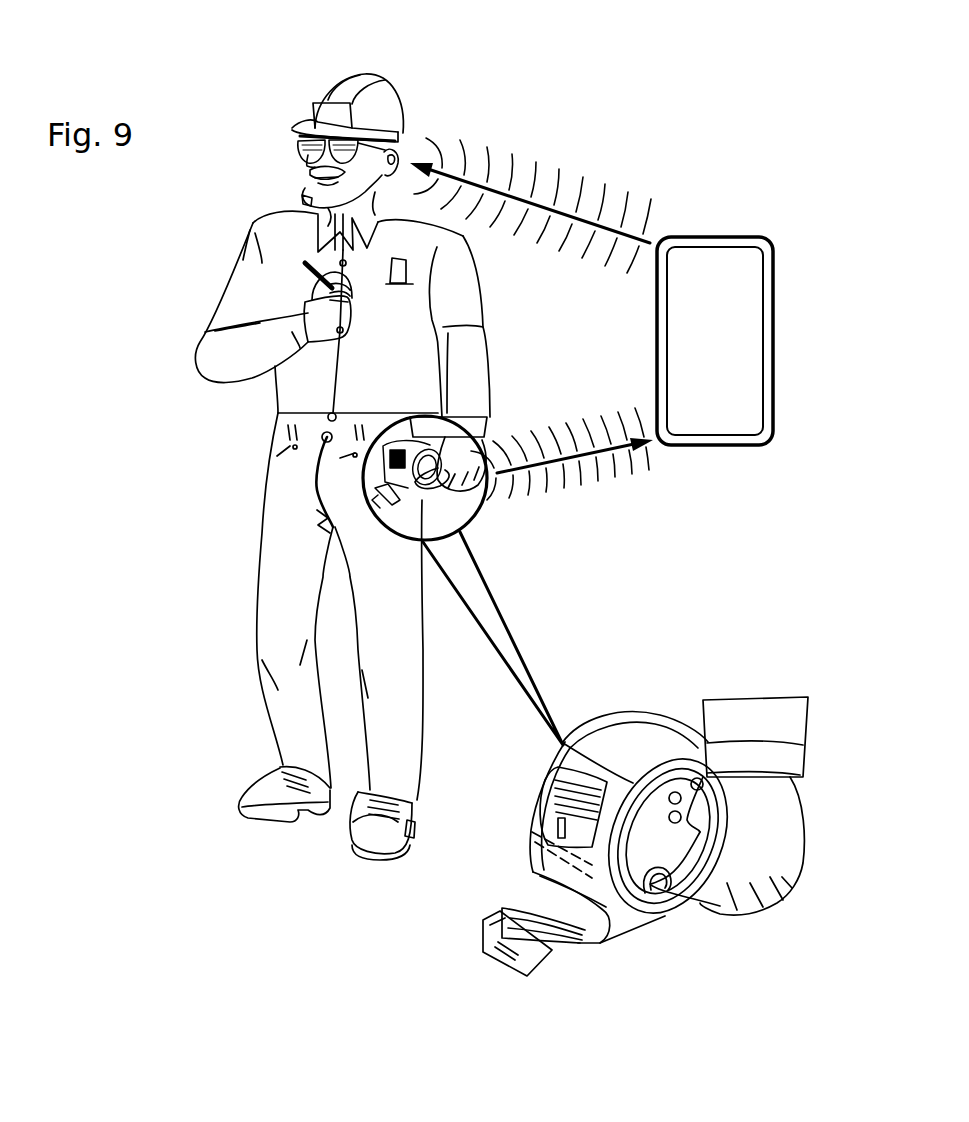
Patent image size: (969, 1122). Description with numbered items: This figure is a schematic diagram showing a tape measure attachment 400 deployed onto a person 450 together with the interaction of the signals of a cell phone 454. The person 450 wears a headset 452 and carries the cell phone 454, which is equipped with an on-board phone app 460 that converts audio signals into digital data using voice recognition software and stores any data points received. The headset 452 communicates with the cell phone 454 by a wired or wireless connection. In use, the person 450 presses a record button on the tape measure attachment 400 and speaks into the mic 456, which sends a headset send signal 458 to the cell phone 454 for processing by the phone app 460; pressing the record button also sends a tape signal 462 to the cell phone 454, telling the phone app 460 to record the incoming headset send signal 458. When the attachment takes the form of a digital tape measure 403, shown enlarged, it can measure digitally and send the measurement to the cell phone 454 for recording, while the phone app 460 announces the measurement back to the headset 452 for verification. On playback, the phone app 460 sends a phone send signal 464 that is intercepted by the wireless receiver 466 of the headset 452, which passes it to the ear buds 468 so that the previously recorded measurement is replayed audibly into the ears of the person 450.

The tape measure attachment 400 is at (388, 462).
The digital tape measure 403 is at (641, 676).
The person 450 is at (210, 364).
The headset 452 is at (292, 110).
The cell phone 454 is at (760, 375).
The mic 456 is at (305, 201).
The headset send signal 458 is at (652, 243).
The phone app 460 is at (757, 332).
The tape signal 462 is at (557, 474).
The phone send signal 464 is at (462, 160).
The wireless receiver 466 is at (400, 153).
The ear buds 468 is at (398, 148).